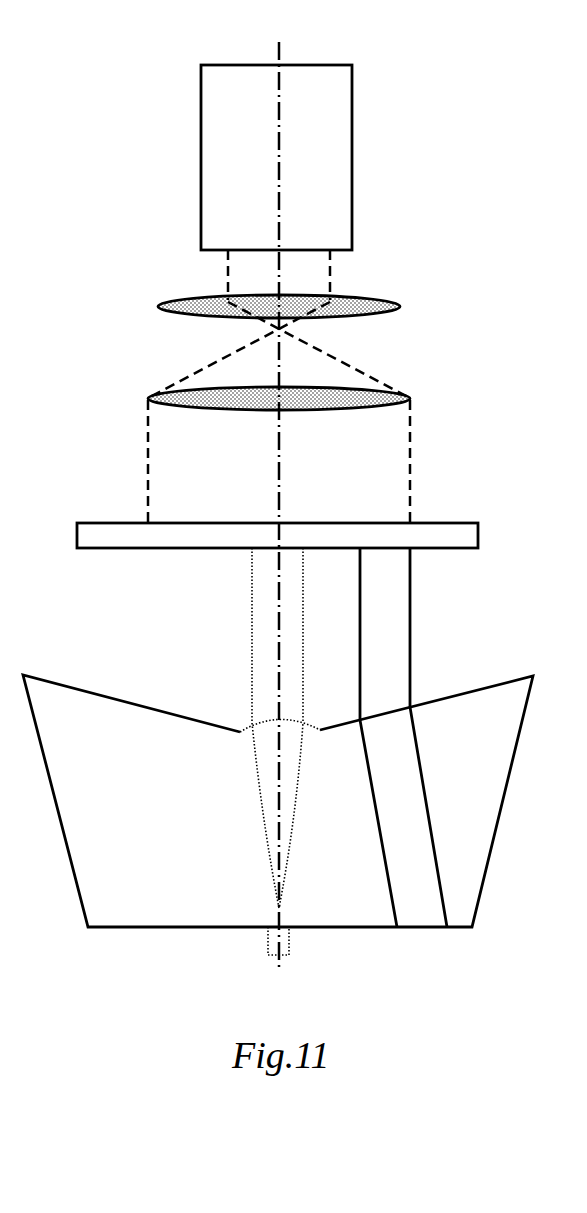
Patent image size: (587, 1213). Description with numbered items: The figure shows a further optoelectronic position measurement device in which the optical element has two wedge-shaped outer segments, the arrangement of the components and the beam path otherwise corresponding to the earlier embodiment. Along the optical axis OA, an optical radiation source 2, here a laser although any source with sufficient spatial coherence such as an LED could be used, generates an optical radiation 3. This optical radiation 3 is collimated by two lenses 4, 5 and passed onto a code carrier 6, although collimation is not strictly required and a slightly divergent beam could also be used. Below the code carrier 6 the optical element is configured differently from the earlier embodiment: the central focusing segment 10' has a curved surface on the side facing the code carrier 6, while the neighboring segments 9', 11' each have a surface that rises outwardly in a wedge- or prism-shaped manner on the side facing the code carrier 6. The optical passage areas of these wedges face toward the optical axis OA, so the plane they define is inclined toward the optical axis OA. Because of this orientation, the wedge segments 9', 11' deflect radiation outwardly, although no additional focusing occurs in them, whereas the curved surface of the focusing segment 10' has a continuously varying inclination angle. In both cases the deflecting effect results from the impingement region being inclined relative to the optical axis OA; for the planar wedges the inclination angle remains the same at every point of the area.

The optical axis OA is at (279, 44).
The optical radiation source 2 is at (353, 145).
The optical radiation 3 is at (330, 282).
The lens 4 is at (400, 306).
The lens 5 is at (410, 398).
The code carrier 6 is at (481, 541).
The neighboring segment 9' is at (151, 801).
The focusing segment 10' is at (273, 751).
The neighboring segment 11' is at (406, 801).